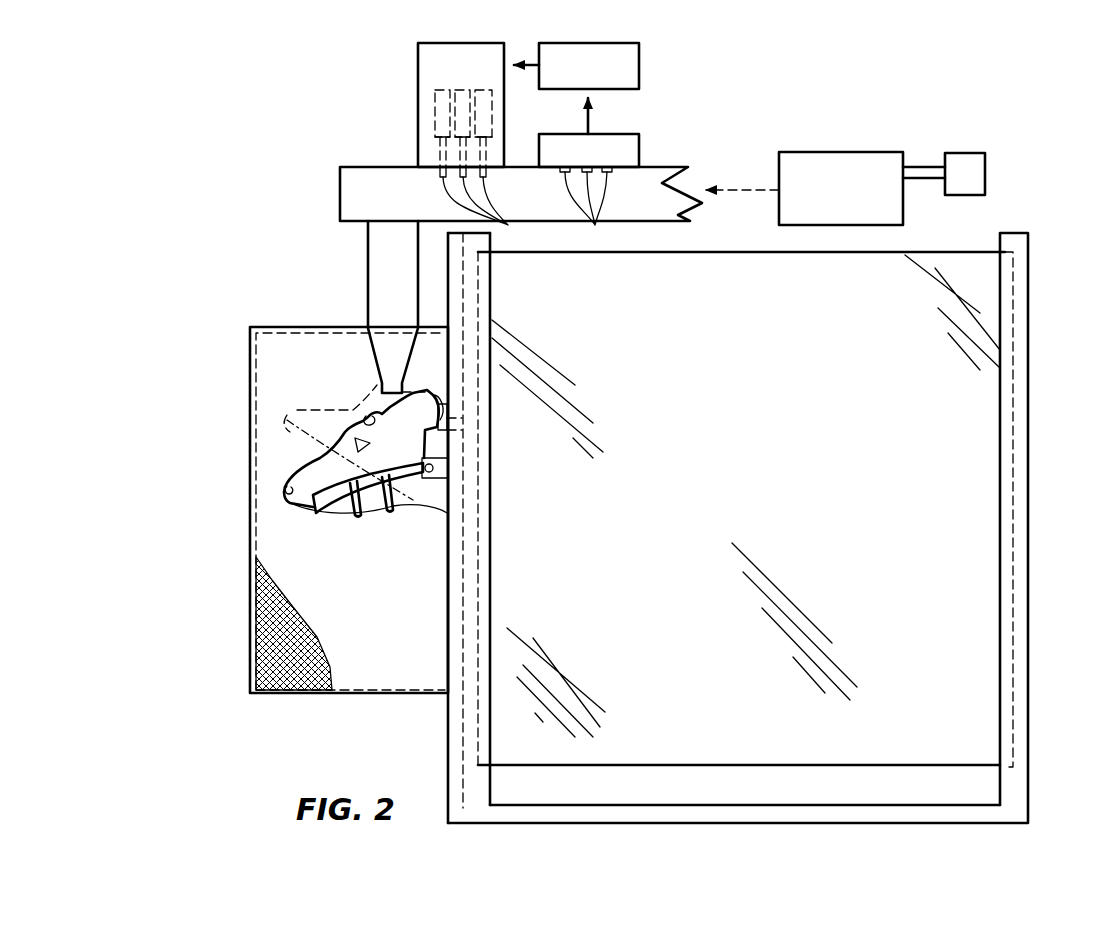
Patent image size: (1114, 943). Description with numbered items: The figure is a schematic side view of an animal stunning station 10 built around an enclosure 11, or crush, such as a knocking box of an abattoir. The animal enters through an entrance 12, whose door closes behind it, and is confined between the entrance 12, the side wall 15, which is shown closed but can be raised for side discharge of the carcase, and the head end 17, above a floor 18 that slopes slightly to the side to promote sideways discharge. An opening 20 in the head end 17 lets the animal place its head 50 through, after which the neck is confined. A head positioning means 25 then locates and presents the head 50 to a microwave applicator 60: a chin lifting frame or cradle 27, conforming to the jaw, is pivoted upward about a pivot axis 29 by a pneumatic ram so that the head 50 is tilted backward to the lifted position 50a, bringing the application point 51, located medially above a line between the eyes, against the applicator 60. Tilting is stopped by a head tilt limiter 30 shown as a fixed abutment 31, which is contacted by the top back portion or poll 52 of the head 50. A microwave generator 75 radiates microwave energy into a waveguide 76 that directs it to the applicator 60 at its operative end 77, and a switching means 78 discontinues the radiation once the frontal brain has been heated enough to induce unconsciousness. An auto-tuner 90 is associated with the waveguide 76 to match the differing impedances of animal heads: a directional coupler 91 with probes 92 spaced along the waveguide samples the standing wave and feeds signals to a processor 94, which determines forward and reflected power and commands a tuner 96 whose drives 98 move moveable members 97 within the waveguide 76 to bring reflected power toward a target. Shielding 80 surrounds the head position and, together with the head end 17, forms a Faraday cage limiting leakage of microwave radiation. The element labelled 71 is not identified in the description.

The animal stunning station 10 is at (298, 263).
The enclosure 11 is at (886, 381).
The entrance 12 is at (1036, 605).
The side wall 15 is at (762, 435).
The head end 17 is at (442, 588).
The floor 18 is at (862, 803).
The opening 20 is at (450, 515).
The head positioning means 25 is at (387, 522).
The chin lifting frame or cradle 27 is at (347, 498).
The pivot axis 29 is at (429, 475).
The head tilt limiter 30 is at (447, 418).
The fixed abutment 31 is at (430, 397).
The head 50 is at (286, 466).
The lifted head position 50a is at (291, 402).
The application point 51 is at (360, 418).
The top back portion (poll) 52 is at (423, 392).
The microwave applicator 60 is at (371, 380).
The gantry arm 71 is at (363, 195).
The microwave generator 75 is at (854, 200).
The waveguide 76 is at (632, 202).
The operative end 77 is at (515, 205).
The switching means 78 is at (979, 186).
The shielding 80 is at (246, 646).
The auto-tuner 90 is at (682, 98).
The directional coupler 91 is at (627, 150).
The probes 92 is at (586, 208).
The processor 94 is at (612, 78).
The tuner 96 is at (418, 122).
The moveable members 97 is at (486, 213).
The drives 98 is at (480, 90).